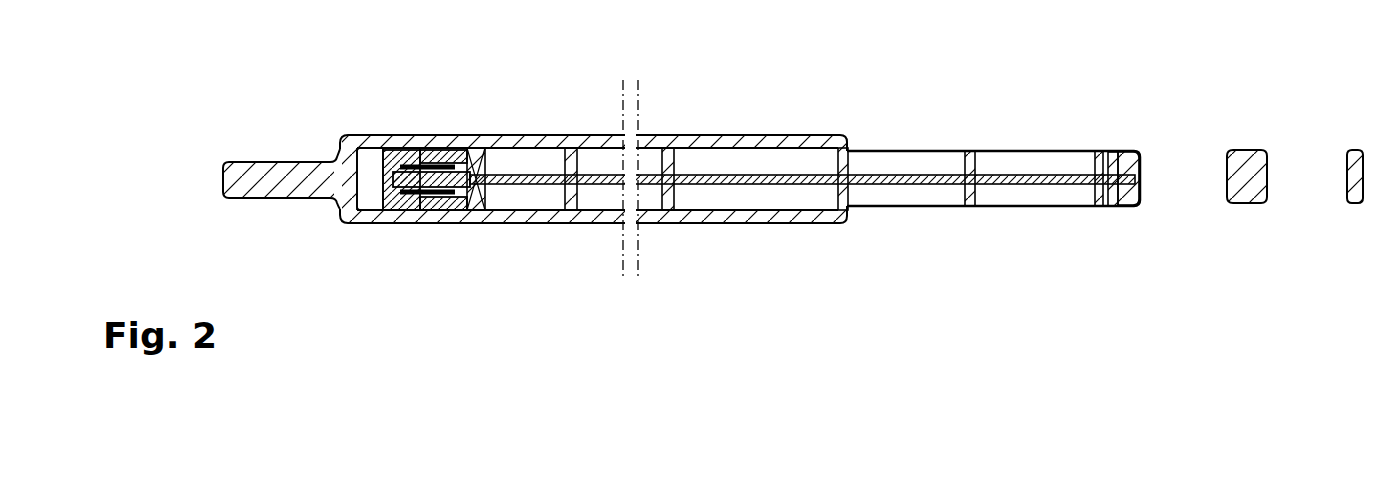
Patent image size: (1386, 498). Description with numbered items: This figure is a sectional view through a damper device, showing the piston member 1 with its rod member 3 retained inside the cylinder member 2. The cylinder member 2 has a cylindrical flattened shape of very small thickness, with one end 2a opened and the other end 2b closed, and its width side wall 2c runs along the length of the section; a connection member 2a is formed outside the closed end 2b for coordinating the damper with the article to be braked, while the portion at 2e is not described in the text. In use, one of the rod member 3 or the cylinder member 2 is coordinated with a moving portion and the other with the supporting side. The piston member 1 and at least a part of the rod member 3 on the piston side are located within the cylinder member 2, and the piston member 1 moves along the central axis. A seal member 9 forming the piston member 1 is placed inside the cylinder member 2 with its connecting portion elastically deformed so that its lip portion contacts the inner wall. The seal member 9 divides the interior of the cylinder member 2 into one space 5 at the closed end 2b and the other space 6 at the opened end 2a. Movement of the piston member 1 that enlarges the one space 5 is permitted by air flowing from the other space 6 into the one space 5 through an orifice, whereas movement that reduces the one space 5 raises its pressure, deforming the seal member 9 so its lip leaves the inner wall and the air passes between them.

The piston member 1 is at (407, 150).
The cylinder member 2 is at (575, 222).
The one end 2a is at (848, 215).
The other end 2b is at (337, 210).
The width side wall 2c is at (695, 138).
The shaft stem 2e is at (262, 160).
The rod member 3 is at (1122, 150).
The one space 5 is at (373, 197).
The other space 6 is at (525, 190).
The seal member 9 is at (420, 218).